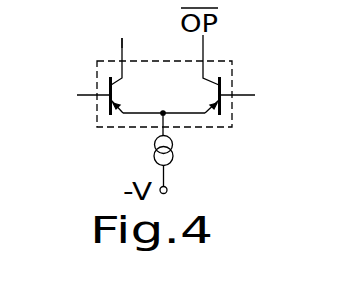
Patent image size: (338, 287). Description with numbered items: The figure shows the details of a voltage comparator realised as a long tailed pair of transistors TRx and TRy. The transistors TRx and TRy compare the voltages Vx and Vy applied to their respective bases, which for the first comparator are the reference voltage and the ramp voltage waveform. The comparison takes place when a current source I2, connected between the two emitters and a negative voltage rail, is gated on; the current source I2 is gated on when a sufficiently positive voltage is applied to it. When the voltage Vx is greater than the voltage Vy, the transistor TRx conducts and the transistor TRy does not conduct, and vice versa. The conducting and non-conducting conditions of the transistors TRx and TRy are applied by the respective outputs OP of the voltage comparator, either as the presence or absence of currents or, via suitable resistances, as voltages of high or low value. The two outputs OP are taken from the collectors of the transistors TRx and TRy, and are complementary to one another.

The transistor TRx is at (100, 80).
The transistor TRy is at (223, 80).
The output OP is at (118, 29).
The voltage Vx is at (76, 97).
The voltage Vy is at (253, 97).
The current source I2 is at (212, 149).